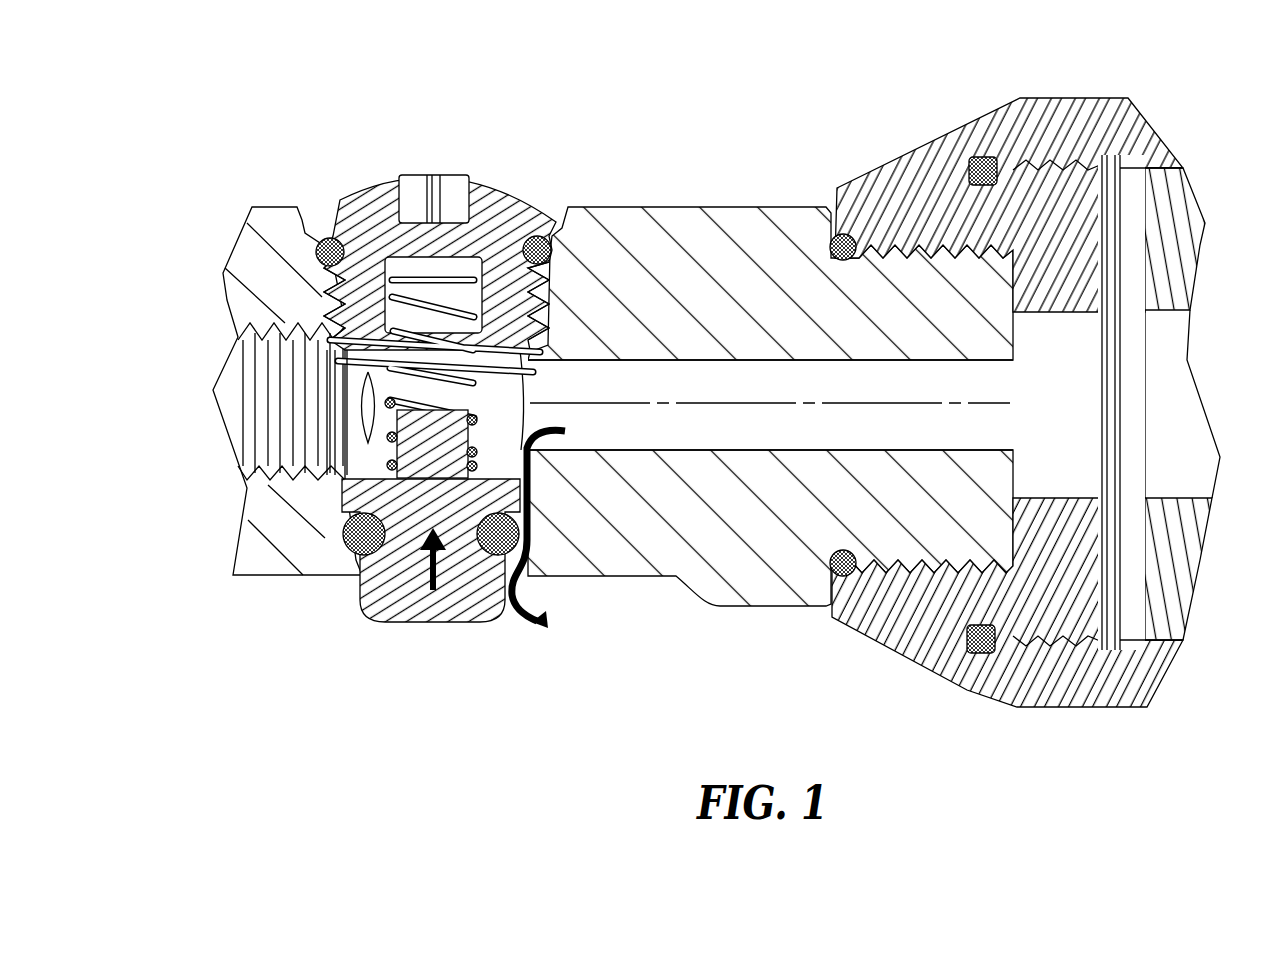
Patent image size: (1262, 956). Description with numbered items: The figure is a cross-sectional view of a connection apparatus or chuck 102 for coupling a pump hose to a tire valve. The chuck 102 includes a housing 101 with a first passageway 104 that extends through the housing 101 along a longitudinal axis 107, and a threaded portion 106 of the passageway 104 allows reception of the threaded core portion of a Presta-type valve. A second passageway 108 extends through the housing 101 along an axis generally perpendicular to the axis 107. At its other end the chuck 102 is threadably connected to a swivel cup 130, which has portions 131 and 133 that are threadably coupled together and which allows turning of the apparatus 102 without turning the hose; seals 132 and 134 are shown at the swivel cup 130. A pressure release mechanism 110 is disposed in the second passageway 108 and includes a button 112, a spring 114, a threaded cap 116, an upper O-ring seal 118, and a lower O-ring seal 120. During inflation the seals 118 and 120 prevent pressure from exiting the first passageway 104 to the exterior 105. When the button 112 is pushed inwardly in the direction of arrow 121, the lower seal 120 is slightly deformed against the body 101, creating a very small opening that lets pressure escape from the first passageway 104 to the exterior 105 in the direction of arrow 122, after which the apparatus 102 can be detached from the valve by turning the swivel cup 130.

The housing 101 is at (722, 207).
The connection apparatus or chuck 102 is at (612, 168).
The first passageway 104 is at (577, 452).
The exterior 105 is at (784, 767).
The threaded portion 106 is at (245, 388).
The longitudinal axis 107 is at (963, 400).
The second passageway 108 is at (553, 333).
The pressure release mechanism 110 is at (358, 416).
The button 112 is at (365, 616).
The spring 114 is at (320, 302).
The threaded cap 116 is at (345, 200).
The upper O-ring seal 118 is at (328, 258).
The lower O-ring seal 120 is at (345, 525).
The arrow 121 is at (427, 557).
The arrow 122 is at (547, 452).
The swivel cup 130 is at (1006, 422).
The portion of swivel cup 131 is at (1155, 668).
The seal 132 is at (835, 580).
The portion of swivel cup 133 is at (1058, 633).
The seal 134 is at (977, 637).